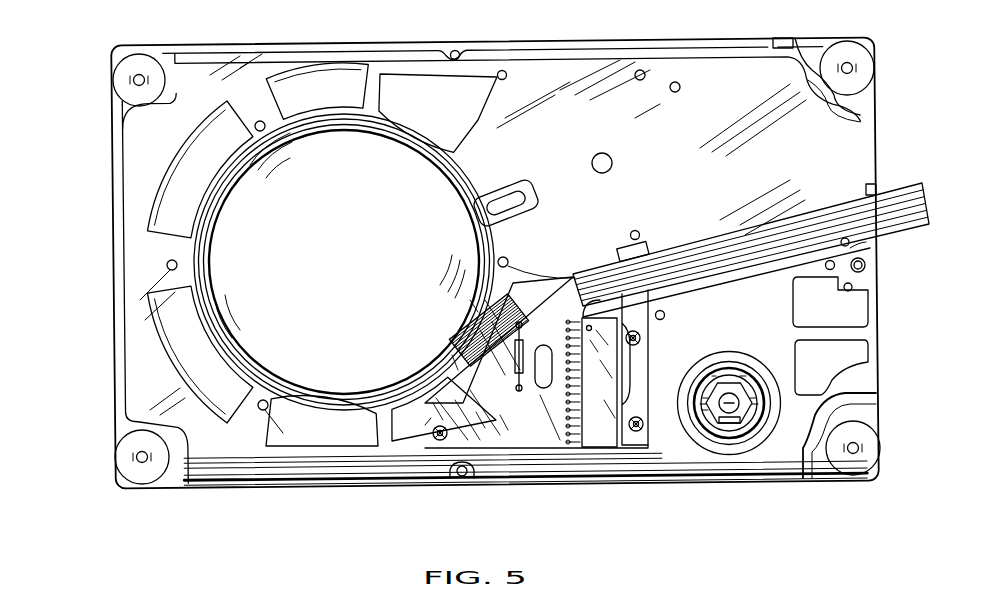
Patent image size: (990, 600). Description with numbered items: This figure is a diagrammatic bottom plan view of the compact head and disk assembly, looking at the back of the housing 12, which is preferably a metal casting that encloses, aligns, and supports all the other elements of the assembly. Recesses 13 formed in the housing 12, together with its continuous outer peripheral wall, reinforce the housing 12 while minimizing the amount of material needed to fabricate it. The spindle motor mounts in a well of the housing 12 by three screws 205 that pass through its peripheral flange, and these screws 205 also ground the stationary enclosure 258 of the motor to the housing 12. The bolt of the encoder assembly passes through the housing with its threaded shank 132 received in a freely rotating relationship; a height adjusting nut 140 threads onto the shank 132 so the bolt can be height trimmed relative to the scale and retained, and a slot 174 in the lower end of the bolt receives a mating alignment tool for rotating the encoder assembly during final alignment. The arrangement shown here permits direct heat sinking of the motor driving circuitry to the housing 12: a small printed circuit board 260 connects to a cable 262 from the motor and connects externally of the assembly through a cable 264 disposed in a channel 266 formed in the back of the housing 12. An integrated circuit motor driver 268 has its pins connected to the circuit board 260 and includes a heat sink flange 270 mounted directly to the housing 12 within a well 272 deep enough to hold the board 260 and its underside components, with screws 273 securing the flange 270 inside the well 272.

The housing 12 is at (272, 488).
The recesses 13 is at (402, 100).
The threaded shank 132 is at (729, 400).
The height adjusting nut 140 is at (720, 424).
The slot 174 is at (738, 424).
The screws 205 is at (260, 120).
The stationary enclosure 258 is at (356, 207).
The printed circuit board 260 is at (520, 432).
The cable 262 is at (490, 300).
The cable 264 is at (928, 205).
The channel 266 is at (850, 197).
The integrated circuit motor driver 268 is at (603, 432).
The flange 270 is at (647, 437).
The well 272 is at (428, 428).
The screws 273 is at (464, 478).